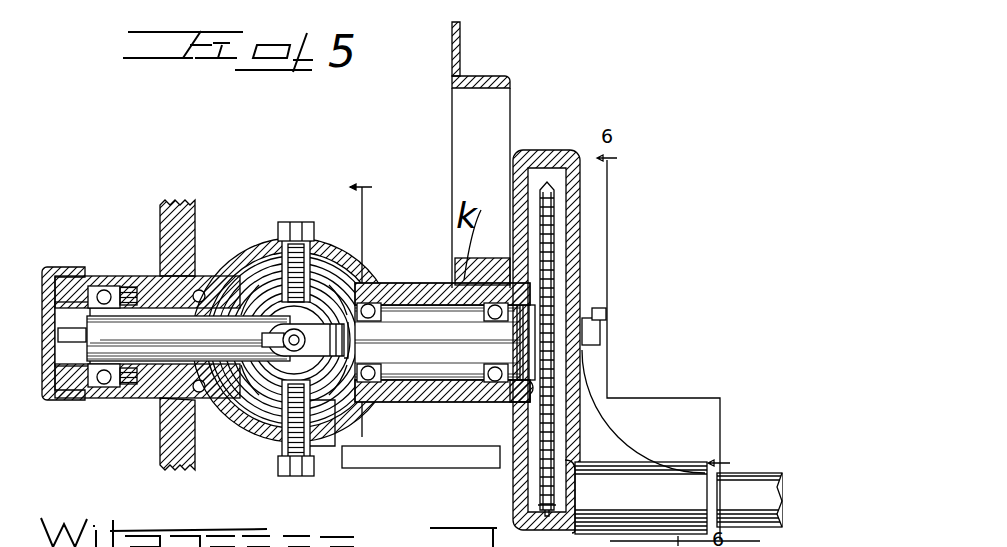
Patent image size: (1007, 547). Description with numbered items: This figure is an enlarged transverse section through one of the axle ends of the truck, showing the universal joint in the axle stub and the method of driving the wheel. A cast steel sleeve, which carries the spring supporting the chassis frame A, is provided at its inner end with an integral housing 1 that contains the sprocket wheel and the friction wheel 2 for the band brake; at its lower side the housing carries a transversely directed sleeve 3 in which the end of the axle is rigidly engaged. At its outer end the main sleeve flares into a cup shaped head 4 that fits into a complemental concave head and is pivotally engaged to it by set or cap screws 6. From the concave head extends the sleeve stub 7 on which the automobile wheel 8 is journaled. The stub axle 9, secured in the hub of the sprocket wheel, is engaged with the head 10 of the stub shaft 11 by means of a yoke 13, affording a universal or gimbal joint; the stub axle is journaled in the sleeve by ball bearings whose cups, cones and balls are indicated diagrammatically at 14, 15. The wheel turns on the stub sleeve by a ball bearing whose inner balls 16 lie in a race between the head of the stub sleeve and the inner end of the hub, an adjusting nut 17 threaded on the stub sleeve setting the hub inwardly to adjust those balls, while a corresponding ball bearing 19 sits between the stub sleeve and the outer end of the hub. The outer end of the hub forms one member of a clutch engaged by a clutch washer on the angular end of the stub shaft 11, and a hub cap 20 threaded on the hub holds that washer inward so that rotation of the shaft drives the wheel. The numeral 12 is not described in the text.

The housing 1 is at (745, 492).
The friction wheel 2 is at (558, 247).
The transversely directed sleeve 3 is at (683, 440).
The cup shaped head 4 is at (297, 340).
The set or cap screws 6 is at (290, 450).
The sleeve stub 7 is at (152, 370).
The automobile wheel 8 is at (177, 185).
The stub axle 9 is at (440, 345).
The head 10 is at (368, 258).
The stub shaft 11 is at (248, 380).
The housing wall 12 is at (376, 292).
The yoke 13 is at (322, 412).
The ball bearings 14 is at (545, 312).
The ball bearings 15 is at (363, 270).
The inner balls 16 is at (203, 293).
The adjusting nut 17 is at (129, 287).
The ball bearing 19 is at (103, 392).
The hub cap 20 is at (58, 267).
The chassis frame A is at (503, 40).